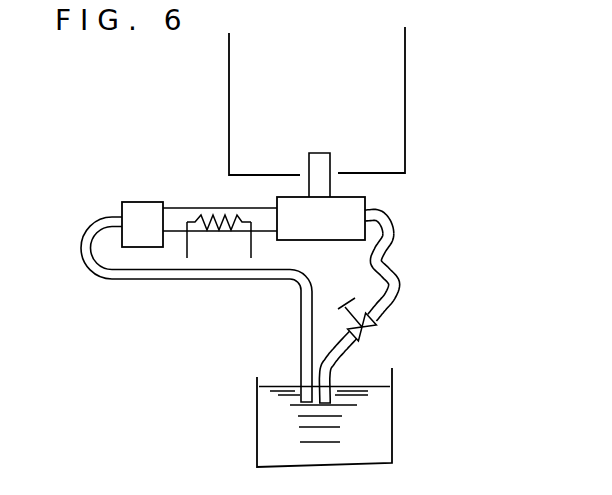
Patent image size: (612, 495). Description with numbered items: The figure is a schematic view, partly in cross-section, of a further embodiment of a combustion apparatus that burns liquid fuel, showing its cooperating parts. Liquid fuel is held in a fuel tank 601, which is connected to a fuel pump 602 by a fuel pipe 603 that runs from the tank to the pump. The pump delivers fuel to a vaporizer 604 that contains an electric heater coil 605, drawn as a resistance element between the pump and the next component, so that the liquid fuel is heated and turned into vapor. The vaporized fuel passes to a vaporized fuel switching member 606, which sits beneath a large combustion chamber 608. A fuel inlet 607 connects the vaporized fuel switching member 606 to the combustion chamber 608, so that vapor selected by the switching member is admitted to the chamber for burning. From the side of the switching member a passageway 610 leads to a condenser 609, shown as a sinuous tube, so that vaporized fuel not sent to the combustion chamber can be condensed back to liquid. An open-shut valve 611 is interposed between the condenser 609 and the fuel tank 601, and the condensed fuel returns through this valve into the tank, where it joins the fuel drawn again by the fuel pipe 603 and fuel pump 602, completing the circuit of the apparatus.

The fuel tank 601 is at (392, 405).
The fuel pump 602 is at (138, 202).
The fuel pipe 603 is at (225, 279).
The vaporizer 604 is at (175, 211).
The electric heater coil 605 is at (219, 216).
The vaporized fuel switching member 606 is at (358, 203).
The fuel inlet 607 is at (316, 153).
The combustion chamber 608 is at (400, 105).
The condenser 609 is at (398, 279).
The passageway 610 is at (388, 222).
The open-shut valve 611 is at (367, 336).